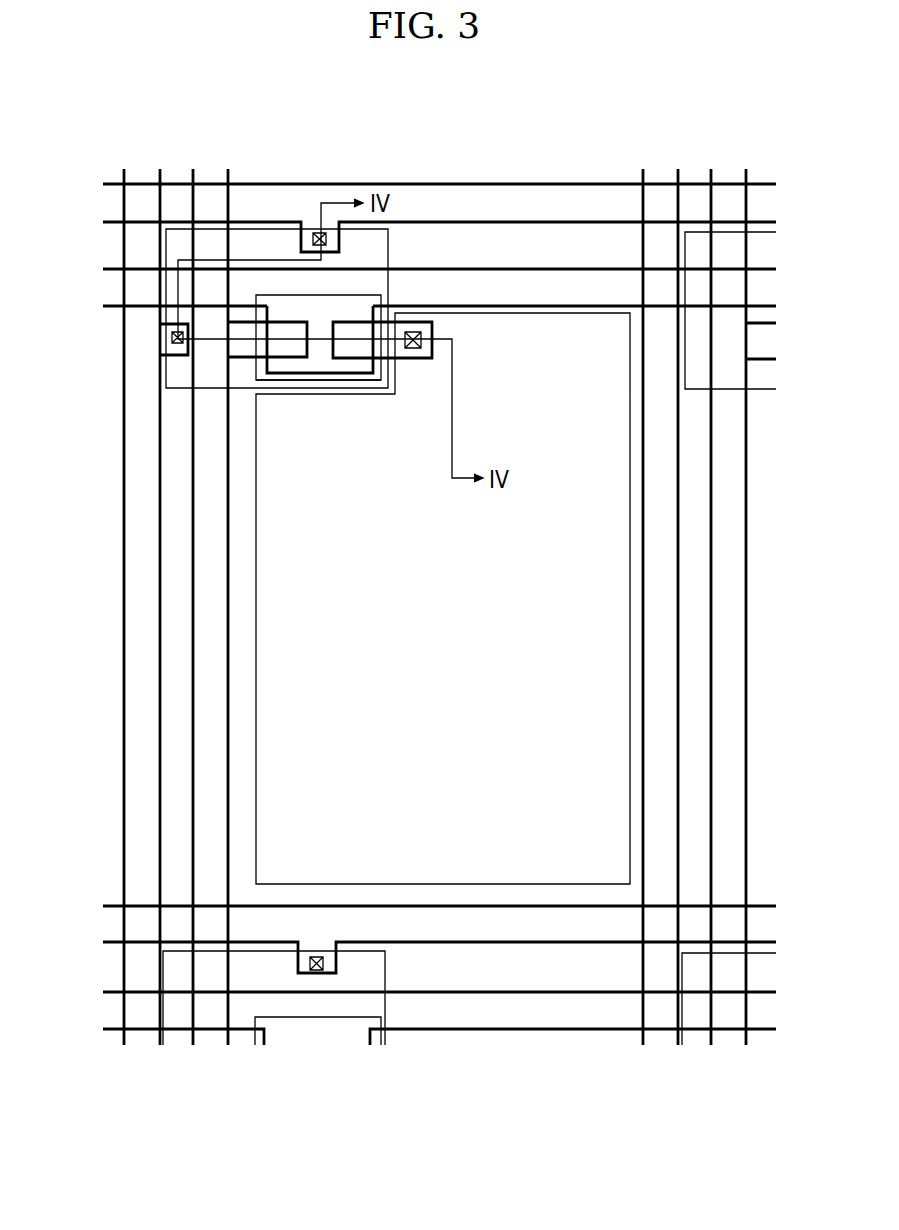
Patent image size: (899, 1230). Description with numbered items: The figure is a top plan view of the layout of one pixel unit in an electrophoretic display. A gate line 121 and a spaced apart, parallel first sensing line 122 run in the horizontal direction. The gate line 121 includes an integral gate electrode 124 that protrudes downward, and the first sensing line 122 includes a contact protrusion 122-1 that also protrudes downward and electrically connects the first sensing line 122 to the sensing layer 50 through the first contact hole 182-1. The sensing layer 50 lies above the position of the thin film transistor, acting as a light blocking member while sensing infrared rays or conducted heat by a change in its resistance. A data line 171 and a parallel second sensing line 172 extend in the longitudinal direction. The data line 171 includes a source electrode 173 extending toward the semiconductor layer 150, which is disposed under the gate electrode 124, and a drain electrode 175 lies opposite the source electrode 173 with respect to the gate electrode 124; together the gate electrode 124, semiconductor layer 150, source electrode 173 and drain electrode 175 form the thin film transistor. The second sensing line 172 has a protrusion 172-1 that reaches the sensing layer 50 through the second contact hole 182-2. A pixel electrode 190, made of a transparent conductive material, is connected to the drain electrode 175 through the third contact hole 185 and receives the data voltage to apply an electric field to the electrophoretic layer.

The second sensing line 172 is at (162, 172).
The data line 171 is at (230, 172).
The first contact hole 182-1 is at (313, 240).
The contact protrusion 122-1 is at (388, 243).
The sensing layer 50 is at (388, 258).
The first sensing line 122 is at (553, 221).
The gate line 121 is at (613, 305).
The second contact hole 182-2 is at (172, 338).
The protrusion 172-1 is at (178, 356).
The third contact hole 185 is at (421, 338).
The pixel electrode 190 is at (580, 313).
The gate electrode 124 is at (327, 373).
The source electrode 173 is at (286, 357).
The semiconductor layer 150 is at (367, 380).
The drain electrode 175 is at (423, 358).